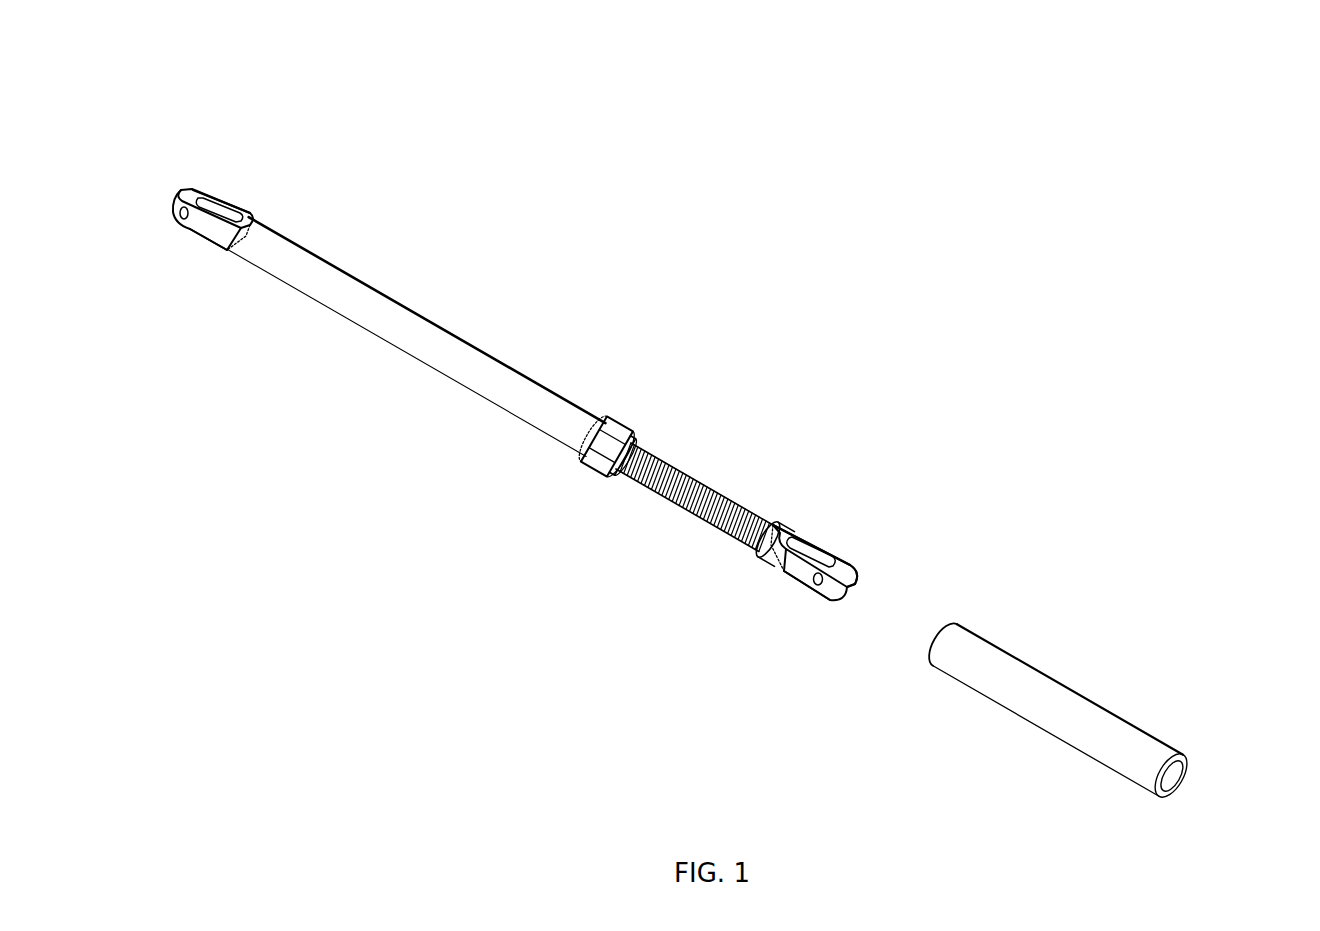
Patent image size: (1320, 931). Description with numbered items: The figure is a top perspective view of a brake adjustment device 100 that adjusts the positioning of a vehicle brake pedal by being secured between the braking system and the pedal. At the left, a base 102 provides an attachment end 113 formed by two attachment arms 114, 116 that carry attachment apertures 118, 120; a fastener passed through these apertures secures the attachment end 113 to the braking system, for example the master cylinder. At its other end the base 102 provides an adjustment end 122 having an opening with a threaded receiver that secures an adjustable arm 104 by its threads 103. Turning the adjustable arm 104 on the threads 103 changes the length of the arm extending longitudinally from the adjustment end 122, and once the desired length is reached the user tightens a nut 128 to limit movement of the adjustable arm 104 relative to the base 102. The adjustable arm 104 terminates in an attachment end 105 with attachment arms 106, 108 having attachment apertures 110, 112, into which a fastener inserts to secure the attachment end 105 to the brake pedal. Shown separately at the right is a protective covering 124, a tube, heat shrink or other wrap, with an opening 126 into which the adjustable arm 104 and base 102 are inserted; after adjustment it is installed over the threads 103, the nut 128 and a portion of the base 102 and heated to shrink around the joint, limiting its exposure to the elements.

The brake adjustment device 100 is at (556, 420).
The base 102 is at (448, 335).
The threads 103 is at (650, 492).
The adjustable arm 104 is at (692, 477).
The attachment end 105 is at (837, 597).
The attachment arm 106 is at (825, 599).
The attachment arm 108 is at (797, 580).
The attachment aperture 110 is at (837, 568).
The attachment aperture 112 is at (822, 583).
The attachment end 113 is at (269, 259).
The attachment arm 114 is at (227, 203).
The attachment arm 116 is at (200, 240).
The attachment aperture 118 is at (207, 203).
The attachment aperture 120 is at (188, 230).
The adjustment end 122 is at (603, 427).
The protective covering 124 is at (1101, 696).
The opening 126 is at (1168, 775).
The nut 128 is at (603, 460).